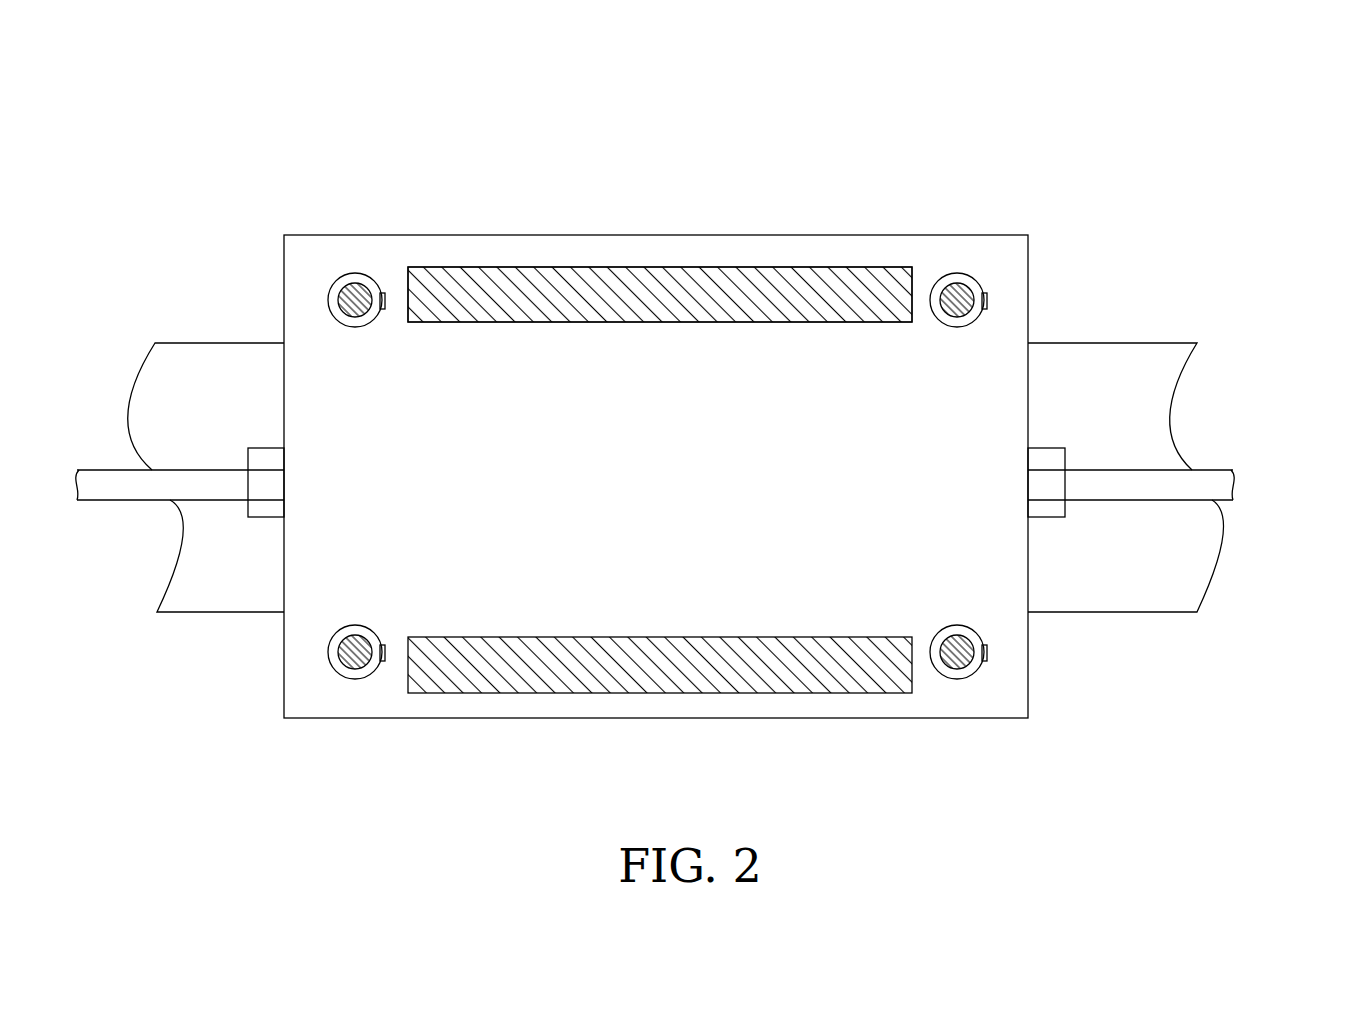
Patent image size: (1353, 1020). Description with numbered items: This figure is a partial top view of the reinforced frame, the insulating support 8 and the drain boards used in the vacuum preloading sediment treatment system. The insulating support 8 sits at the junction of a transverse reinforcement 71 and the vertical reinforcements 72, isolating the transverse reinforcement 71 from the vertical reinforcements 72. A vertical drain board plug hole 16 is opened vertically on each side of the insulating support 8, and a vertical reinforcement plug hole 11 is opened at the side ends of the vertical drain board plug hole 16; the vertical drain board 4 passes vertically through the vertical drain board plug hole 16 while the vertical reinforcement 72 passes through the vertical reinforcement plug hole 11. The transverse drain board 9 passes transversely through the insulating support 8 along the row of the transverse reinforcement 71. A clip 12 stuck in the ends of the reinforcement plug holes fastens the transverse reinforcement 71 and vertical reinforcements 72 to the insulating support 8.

The vertical drain board 4 is at (662, 552).
The insulating support 8 is at (656, 389).
The transverse drain board 9 is at (215, 336).
The vertical reinforcement plug hole 11 is at (414, 193).
The clip 12 is at (621, 448).
The vertical drain board plug hole 16 is at (680, 191).
The transverse reinforcement 71 is at (1179, 510).
The vertical reinforcement 72 is at (702, 448).